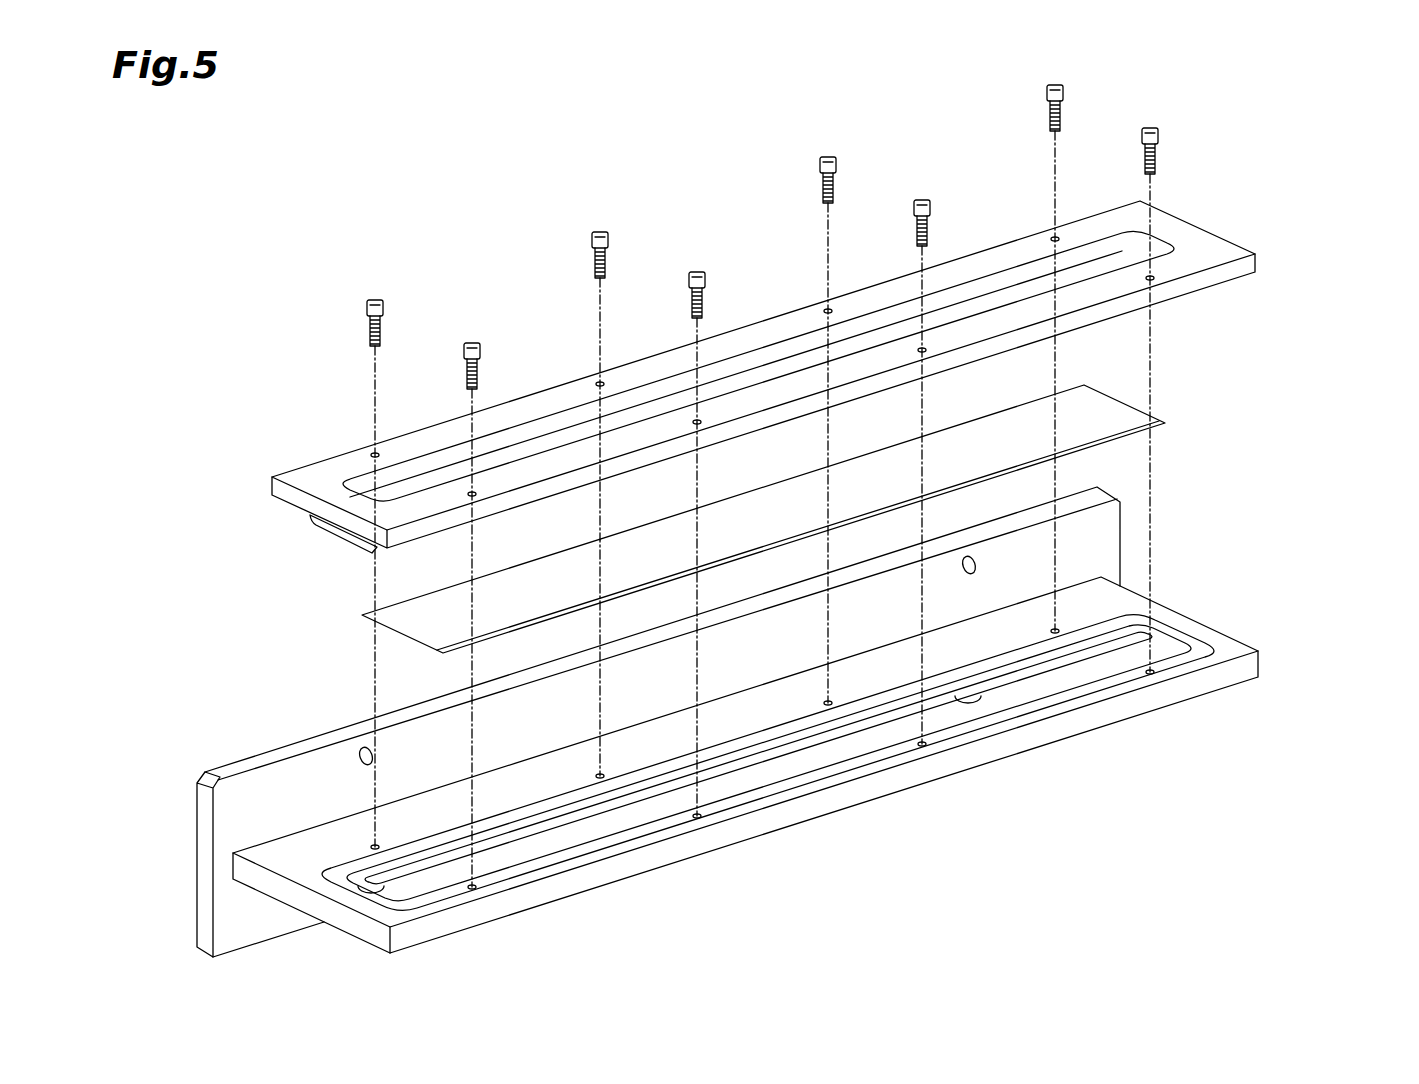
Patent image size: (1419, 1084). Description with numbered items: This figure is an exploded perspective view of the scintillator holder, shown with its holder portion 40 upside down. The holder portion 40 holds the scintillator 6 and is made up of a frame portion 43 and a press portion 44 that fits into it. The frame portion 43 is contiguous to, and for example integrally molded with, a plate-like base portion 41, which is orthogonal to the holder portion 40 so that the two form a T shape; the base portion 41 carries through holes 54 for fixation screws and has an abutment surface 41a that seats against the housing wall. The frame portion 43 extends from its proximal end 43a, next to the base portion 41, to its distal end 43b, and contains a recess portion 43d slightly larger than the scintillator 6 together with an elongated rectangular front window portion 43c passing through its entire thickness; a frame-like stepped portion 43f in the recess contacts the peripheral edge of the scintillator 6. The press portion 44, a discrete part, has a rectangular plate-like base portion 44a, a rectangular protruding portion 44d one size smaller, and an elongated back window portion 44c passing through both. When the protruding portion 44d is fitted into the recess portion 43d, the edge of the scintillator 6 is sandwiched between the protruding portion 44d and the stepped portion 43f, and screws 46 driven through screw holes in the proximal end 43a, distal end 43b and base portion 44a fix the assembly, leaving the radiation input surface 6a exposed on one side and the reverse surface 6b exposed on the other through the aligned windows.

The holder portion 40 is at (826, 570).
The base portion 41 is at (608, 722).
The abutment surface 41a is at (662, 722).
The frame portion 43 is at (802, 696).
The proximal end 43a is at (756, 712).
The distal end 43b is at (873, 792).
The front window portion 43c is at (586, 826).
The recess portion 43d is at (1166, 636).
The stepped portion 43f is at (355, 885).
The press portion 44 is at (821, 397).
The base portion 44a is at (1215, 250).
The back window portion 44c is at (985, 300).
The protruding portion 44d is at (343, 540).
The screws 46 is at (375, 300).
The scintillator 6 is at (783, 510).
The radiation input surface 6a is at (792, 548).
The reverse surface 6b is at (868, 478).
The through holes 54 is at (365, 745).